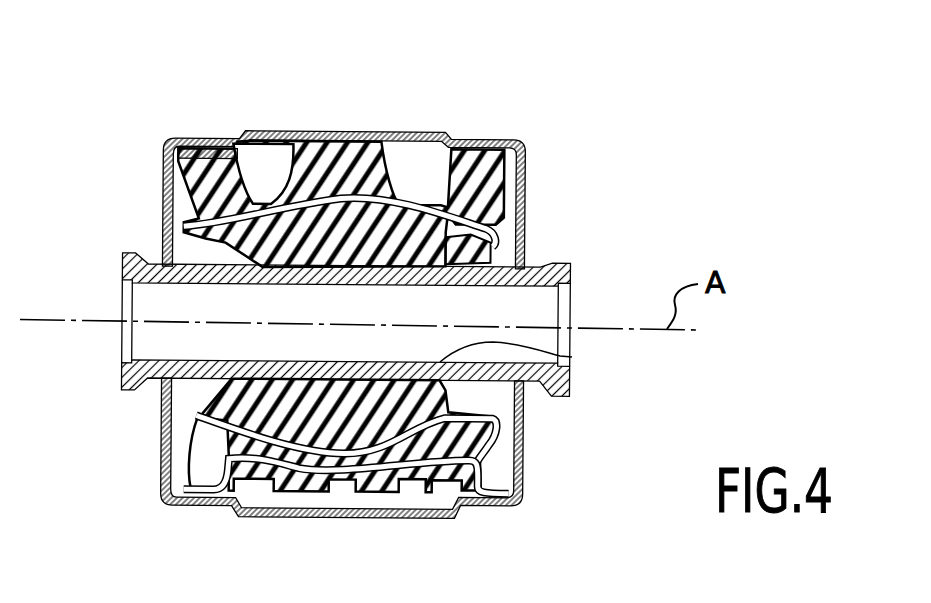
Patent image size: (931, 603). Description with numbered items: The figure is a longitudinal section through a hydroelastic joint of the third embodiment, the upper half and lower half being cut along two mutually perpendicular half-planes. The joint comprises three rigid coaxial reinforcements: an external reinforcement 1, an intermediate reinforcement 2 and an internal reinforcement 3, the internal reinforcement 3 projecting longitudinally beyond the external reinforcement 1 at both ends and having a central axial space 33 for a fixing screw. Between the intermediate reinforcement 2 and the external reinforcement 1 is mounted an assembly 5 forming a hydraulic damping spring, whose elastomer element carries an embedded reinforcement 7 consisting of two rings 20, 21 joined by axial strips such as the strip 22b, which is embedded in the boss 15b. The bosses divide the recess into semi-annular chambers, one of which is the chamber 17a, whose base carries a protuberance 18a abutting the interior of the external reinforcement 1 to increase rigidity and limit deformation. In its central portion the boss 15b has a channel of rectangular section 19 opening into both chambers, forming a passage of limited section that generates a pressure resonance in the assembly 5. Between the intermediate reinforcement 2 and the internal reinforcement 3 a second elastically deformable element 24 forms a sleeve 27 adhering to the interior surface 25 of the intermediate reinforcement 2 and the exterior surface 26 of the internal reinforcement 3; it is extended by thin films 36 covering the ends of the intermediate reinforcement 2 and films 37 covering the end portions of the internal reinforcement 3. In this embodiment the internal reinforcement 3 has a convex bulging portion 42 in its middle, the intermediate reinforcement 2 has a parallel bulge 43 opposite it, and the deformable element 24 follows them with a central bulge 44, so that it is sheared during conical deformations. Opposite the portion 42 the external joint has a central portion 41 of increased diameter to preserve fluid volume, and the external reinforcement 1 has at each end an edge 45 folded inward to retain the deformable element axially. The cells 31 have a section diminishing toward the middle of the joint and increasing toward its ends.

The external reinforcement 1 is at (349, 269).
The intermediate reinforcement 2 is at (280, 353).
The internal reinforcement 3 is at (303, 325).
The assembly forming a hydraulic damping spring 5 is at (522, 448).
The embedded reinforcement 7 is at (291, 460).
The boss 15b is at (236, 532).
The chamber 17a is at (340, 147).
The protuberance 18a is at (226, 163).
The channel of rectangular section 19 is at (323, 533).
The ring 20 is at (298, 199).
The ring 21 is at (529, 197).
The strip 22b is at (442, 532).
The second elastically deformable element 24 is at (283, 435).
The interior surface of the intermediate reinforcement 25 is at (429, 132).
The exterior surface of the internal reinforcement 26 is at (528, 242).
The sleeve 27 is at (535, 359).
The cells 31 is at (284, 223).
The central axial space 33 is at (301, 330).
The film 36 is at (529, 222).
The film 37 is at (142, 437).
The central portion of increased diameter 41 is at (340, 135).
The convex exterior bulging portion 42 is at (372, 134).
The convex parallel bulge 43 is at (344, 100).
The central bulge 44 is at (379, 529).
The edge folded towards the interior 45 is at (337, 311).